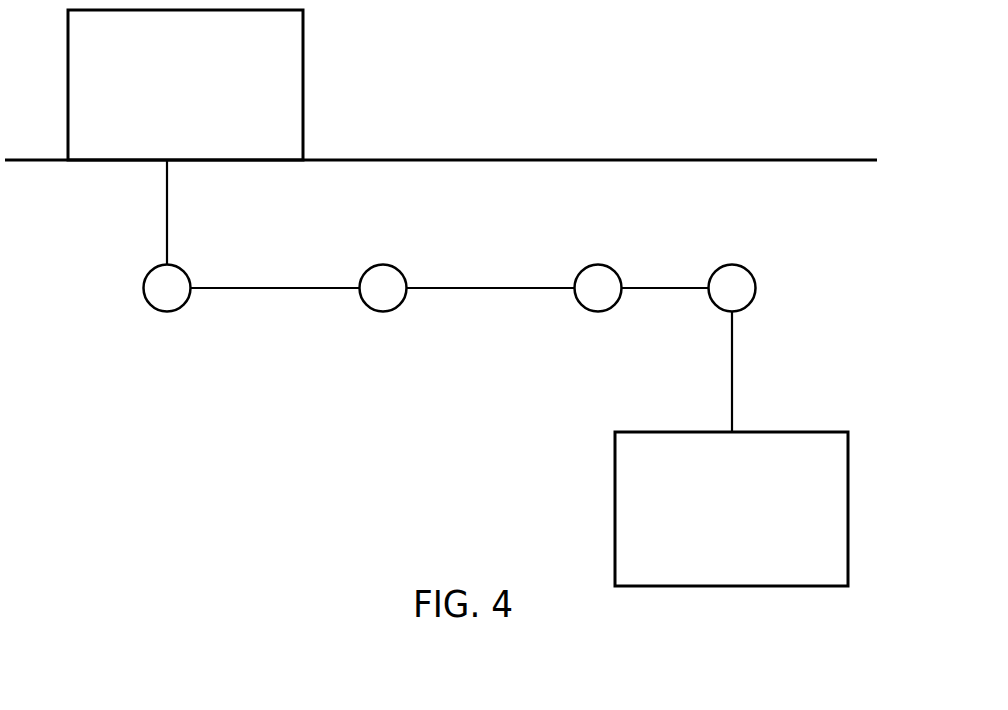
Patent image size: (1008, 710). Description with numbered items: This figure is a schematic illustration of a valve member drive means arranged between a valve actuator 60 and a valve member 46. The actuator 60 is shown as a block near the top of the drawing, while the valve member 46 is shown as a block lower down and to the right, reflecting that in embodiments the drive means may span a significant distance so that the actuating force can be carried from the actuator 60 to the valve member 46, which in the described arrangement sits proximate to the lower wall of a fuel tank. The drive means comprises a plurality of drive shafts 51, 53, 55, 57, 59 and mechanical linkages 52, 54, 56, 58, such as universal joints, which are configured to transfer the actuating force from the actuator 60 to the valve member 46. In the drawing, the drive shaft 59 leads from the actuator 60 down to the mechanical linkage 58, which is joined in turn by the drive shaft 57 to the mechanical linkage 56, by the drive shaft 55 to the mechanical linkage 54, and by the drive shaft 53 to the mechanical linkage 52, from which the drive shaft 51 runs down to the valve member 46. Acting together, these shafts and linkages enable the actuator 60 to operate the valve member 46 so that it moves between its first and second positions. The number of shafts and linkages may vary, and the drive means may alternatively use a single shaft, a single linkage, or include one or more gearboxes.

The valve member 46 is at (851, 503).
The drive shaft 51 is at (742, 380).
The mechanical linkage 52 is at (755, 279).
The drive shaft 53 is at (672, 288).
The mechanical linkage 54 is at (598, 313).
The drive shaft 55 is at (450, 287).
The mechanical linkage 56 is at (386, 314).
The drive shaft 57 is at (283, 288).
The mechanical linkage 58 is at (158, 313).
The drive shaft 59 is at (166, 240).
The valve actuator 60 is at (304, 101).